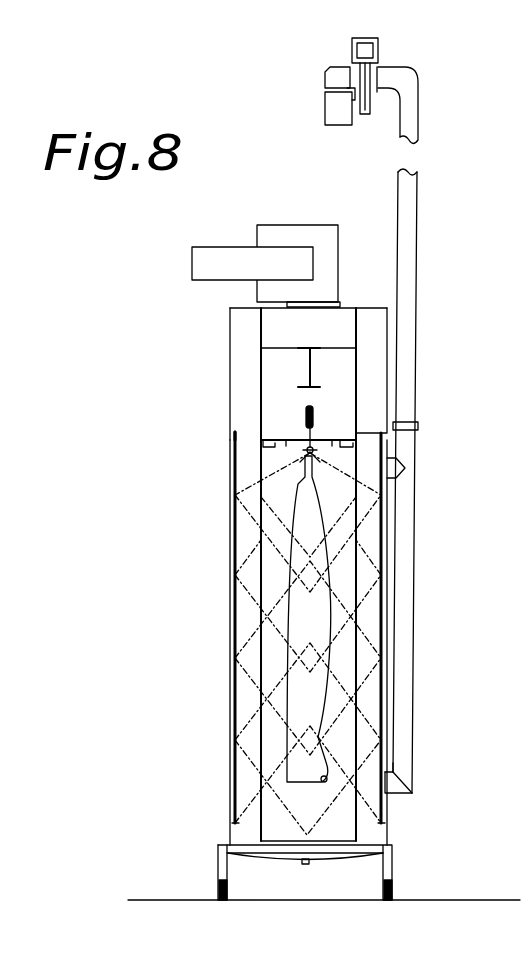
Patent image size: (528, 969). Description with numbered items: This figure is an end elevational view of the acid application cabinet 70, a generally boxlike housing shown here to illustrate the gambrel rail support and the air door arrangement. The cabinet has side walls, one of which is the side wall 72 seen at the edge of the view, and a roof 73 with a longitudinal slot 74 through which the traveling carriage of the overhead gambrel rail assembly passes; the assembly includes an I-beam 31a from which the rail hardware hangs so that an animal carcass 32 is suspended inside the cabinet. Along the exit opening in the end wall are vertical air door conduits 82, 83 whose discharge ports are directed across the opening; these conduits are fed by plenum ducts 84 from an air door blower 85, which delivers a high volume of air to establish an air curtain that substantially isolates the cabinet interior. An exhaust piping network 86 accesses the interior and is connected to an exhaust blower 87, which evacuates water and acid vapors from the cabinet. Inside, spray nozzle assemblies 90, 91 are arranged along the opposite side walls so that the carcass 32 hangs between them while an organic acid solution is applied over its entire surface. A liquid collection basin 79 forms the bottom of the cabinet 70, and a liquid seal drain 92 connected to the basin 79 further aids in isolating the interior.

The exhaust blower 87 is at (327, 54).
The exhaust piping network 86 is at (404, 259).
The air door blower 85 is at (309, 237).
The plenum ducts 84 is at (284, 326).
The I-beam 31a is at (308, 368).
The air door conduit 82 is at (246, 400).
The air door conduit 83 is at (372, 383).
The roof 73 is at (279, 440).
The longitudinal slot 74 is at (318, 440).
The acid application cabinet 70 is at (163, 592).
The side wall 72 is at (230, 773).
The spray nozzle assembly 90 is at (235, 707).
The spray nozzle assembly 91 is at (382, 677).
The animal carcass 32 is at (322, 633).
The liquid collection basin 79 is at (290, 853).
The liquid seal drain 92 is at (305, 865).